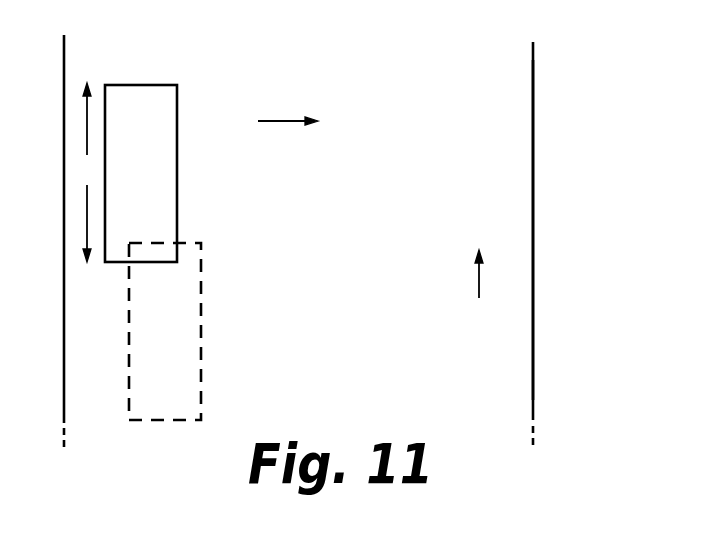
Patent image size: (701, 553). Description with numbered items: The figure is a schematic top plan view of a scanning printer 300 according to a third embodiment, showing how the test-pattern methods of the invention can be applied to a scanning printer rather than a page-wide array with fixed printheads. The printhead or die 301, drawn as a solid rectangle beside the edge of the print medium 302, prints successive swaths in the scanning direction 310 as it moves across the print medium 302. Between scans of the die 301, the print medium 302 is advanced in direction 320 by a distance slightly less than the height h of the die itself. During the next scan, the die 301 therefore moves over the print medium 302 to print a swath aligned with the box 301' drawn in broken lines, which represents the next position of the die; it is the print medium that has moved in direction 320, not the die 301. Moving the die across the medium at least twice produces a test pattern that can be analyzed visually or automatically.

The scanning printer 300 is at (556, 110).
The printhead or die 301 is at (183, 173).
The box indicating next position of the die 301' is at (201, 331).
The print medium 302 is at (534, 178).
The scanning direction 310 is at (277, 120).
The direction of print medium advance 320 is at (478, 279).
The height of the die h is at (88, 172).